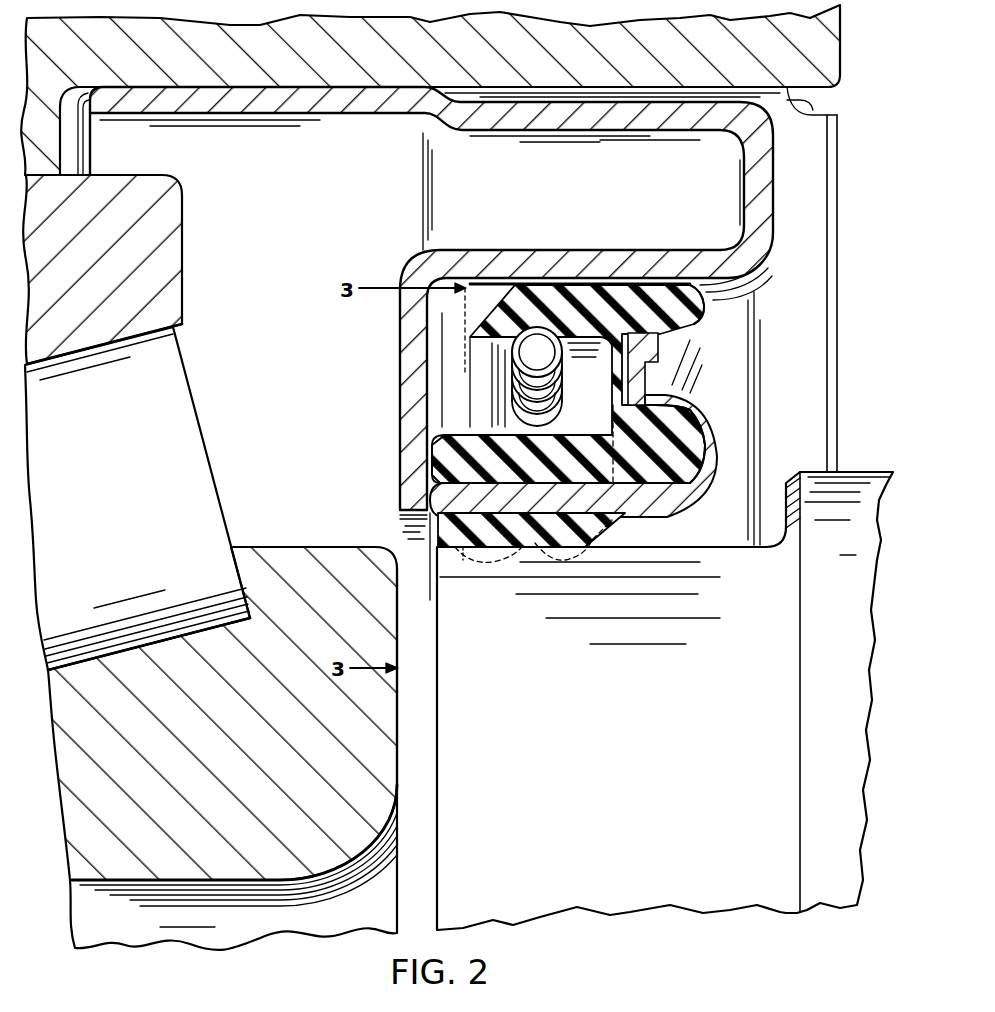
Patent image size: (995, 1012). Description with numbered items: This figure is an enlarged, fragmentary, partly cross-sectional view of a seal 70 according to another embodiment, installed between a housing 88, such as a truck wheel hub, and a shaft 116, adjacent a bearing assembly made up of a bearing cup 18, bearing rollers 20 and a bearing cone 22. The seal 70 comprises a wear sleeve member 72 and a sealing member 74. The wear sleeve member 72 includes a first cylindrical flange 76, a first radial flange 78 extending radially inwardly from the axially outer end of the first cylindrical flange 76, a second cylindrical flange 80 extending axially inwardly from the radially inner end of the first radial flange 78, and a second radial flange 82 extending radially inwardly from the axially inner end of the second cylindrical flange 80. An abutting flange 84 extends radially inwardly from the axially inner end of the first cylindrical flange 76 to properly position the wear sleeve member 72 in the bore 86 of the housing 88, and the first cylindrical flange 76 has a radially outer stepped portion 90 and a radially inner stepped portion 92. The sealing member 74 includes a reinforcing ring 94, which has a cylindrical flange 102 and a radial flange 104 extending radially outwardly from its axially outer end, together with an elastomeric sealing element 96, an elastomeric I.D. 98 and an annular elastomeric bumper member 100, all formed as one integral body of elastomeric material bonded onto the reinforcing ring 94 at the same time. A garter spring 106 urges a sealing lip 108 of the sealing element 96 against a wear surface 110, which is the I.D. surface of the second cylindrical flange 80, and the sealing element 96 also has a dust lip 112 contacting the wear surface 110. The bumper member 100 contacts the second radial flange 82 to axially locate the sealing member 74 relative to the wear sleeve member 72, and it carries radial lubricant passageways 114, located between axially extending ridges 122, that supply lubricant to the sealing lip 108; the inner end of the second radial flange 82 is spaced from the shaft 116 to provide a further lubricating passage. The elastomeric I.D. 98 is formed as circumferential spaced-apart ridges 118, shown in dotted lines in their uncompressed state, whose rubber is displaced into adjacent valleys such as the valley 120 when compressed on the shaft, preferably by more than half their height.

The bearing cup 18 is at (184, 287).
The bearing rollers 20 is at (196, 436).
The bearing cone 22 is at (275, 548).
The seal 70 is at (790, 364).
The wear sleeve member 72 is at (787, 175).
The sealing member 74 is at (693, 395).
The first cylindrical flange 76 is at (694, 128).
The first radial flange 78 is at (744, 205).
The second cylindrical flange 80 is at (630, 262).
The second radial flange 82 is at (403, 316).
The abutting flange 84 is at (88, 143).
The bore 86 is at (835, 113).
The housing 88 is at (840, 45).
The radially outer stepped portion 90 is at (334, 113).
The radially inner stepped portion 92 is at (560, 128).
The reinforcing ring 94 is at (705, 472).
The elastomeric sealing element 96 is at (591, 367).
The elastomeric I.D. 98 is at (596, 520).
The annular elastomeric bumper member 100 is at (430, 482).
The cylindrical flange 102 is at (608, 497).
The radial flange 104 is at (700, 432).
The garter spring 106 is at (495, 313).
The sealing lip 108 is at (497, 285).
The wear surface 110 is at (581, 290).
The dust lip 112 is at (704, 305).
The radial lubricant passageways 114 is at (404, 527).
The shaft 116 is at (572, 721).
The ridges 118 is at (562, 569).
The valley 120 is at (554, 547).
The axially extending ridges 122 is at (440, 422).